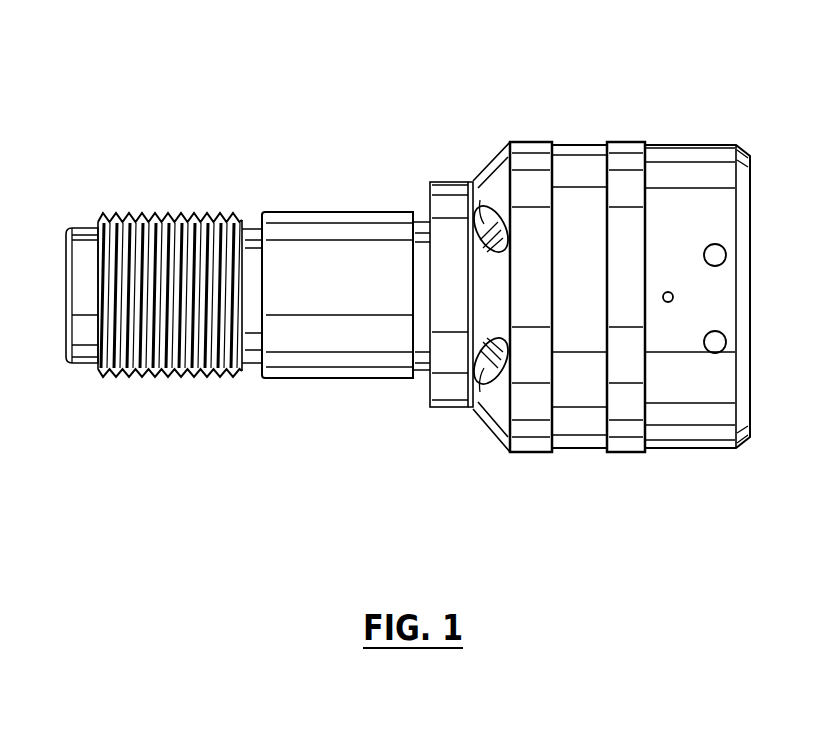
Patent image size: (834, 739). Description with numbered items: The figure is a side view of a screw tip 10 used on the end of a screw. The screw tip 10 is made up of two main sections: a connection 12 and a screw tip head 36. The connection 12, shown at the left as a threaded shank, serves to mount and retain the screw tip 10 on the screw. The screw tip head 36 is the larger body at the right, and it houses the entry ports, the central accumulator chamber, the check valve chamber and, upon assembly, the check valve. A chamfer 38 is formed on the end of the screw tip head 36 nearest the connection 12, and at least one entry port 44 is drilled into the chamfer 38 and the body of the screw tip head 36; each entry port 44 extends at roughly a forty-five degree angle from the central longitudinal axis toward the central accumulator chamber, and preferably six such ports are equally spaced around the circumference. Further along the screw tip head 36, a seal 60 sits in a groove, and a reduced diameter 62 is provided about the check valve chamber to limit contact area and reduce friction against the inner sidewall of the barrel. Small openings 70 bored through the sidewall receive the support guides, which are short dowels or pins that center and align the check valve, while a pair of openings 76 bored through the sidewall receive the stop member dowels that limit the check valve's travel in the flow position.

The screw tip 10 is at (438, 468).
The connection 12 is at (408, 388).
The screw tip head 36 is at (757, 452).
The chamfer 38 is at (505, 170).
The entry port 44 is at (495, 195).
The seal 60 is at (575, 142).
The reduced diameter 62 is at (692, 145).
The openings 70 is at (673, 298).
The openings 76 is at (727, 253).